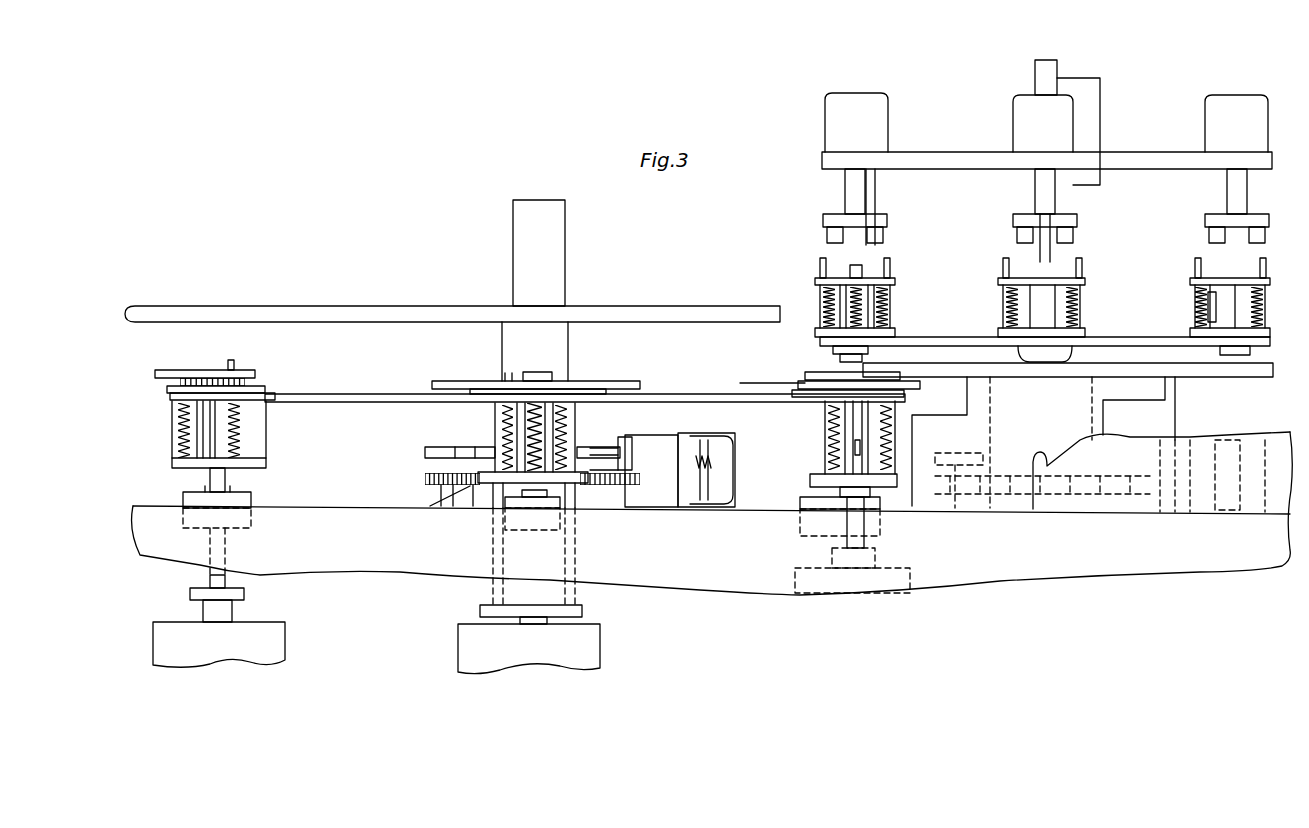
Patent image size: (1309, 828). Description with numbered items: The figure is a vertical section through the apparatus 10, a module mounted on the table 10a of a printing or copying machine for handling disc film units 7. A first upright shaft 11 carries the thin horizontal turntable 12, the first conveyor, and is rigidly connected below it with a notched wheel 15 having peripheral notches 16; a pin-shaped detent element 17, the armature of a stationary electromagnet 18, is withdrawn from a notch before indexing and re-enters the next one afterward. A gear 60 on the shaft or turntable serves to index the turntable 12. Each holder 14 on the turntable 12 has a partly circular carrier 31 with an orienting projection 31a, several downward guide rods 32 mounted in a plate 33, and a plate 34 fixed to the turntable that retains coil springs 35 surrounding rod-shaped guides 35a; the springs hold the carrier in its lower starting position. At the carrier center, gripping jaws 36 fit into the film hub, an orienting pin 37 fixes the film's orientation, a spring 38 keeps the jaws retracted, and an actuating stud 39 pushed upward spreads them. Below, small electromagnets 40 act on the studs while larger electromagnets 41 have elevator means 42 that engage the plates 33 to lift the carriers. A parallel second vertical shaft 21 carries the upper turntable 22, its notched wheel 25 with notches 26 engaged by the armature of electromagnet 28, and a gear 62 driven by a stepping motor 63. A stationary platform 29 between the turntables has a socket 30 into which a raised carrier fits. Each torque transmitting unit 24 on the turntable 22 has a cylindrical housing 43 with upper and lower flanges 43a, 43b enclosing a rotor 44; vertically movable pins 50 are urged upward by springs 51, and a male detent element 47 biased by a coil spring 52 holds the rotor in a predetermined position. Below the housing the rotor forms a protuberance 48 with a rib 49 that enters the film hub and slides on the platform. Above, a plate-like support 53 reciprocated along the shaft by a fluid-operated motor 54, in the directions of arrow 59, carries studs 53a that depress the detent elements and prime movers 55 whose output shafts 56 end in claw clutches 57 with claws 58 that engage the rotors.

The film unit 7 is at (768, 380).
The apparatus 10 is at (778, 165).
The table 10a is at (788, 505).
The first upright shaft 11 is at (536, 205).
The turntable 12 is at (300, 394).
The holder 14 is at (176, 457).
The notched wheel 15 is at (470, 442).
The peripheral notch 16 is at (640, 440).
The detent element 17 is at (632, 458).
The electromagnet 18 is at (690, 440).
The second vertical shaft 21 is at (1057, 76).
The turntable 22 is at (1138, 346).
The torque transmitting unit 24 is at (790, 250).
The wheel 25 is at (992, 440).
The peripheral notch 26 is at (960, 455).
The electromagnet 28 is at (1188, 436).
The stationary horizontal platform 29 is at (1268, 378).
The socket 30 is at (930, 380).
The carrier 31 is at (182, 372).
The orienting projection 31a is at (232, 362).
The guide rod 32 is at (493, 420).
The plate 33 is at (568, 490).
The plate 34 is at (562, 406).
The coil spring 35 is at (425, 452).
The rod-shaped guide 35a is at (462, 496).
The gripping jaw 36 is at (548, 374).
The orienting pin 37 is at (522, 394).
The spring 38 is at (520, 396).
The actuating stud 39 is at (552, 396).
The electromagnet 40 is at (235, 528).
The electromagnet 41 is at (240, 630).
The elevator means 42 is at (493, 506).
The cylindrical housing 43 is at (828, 300).
The upper flange 43a is at (888, 300).
The lower flange 43b is at (893, 330).
The rotor 44 is at (862, 266).
The male detent element 47 is at (862, 278).
The protuberance 48 is at (840, 358).
The rib 49 is at (833, 348).
The pin 50 is at (820, 262).
The spring 51 is at (830, 290).
The coil spring 52 is at (830, 310).
The support 53 is at (958, 160).
The stud 53a is at (878, 180).
The fluid-operated motor 54 is at (1100, 86).
The prime mover 55 is at (854, 95).
The output shaft 56 is at (845, 185).
The claw clutch 57 is at (823, 219).
The claw 58 is at (840, 240).
The double-headed arrow 59 is at (920, 108).
The gear 60 is at (428, 478).
The gear 62 is at (996, 508).
The stepping motor 63 is at (958, 510).